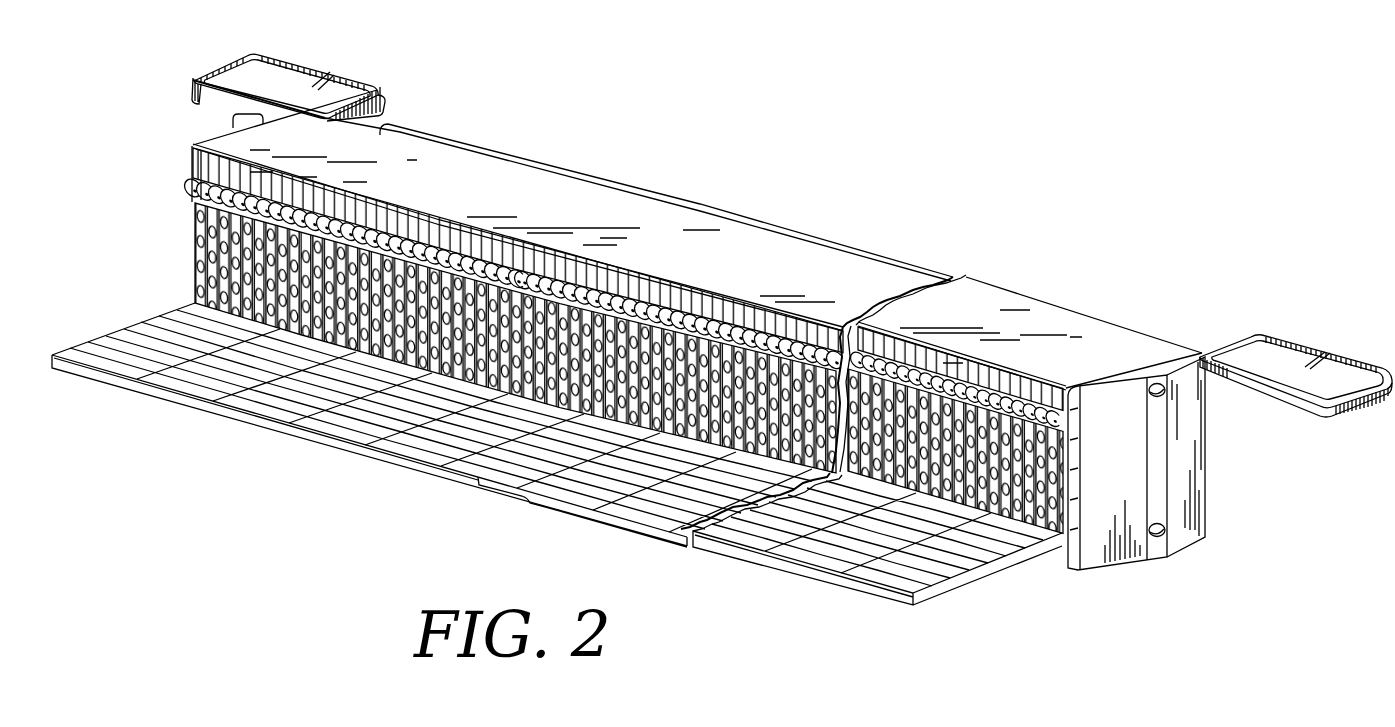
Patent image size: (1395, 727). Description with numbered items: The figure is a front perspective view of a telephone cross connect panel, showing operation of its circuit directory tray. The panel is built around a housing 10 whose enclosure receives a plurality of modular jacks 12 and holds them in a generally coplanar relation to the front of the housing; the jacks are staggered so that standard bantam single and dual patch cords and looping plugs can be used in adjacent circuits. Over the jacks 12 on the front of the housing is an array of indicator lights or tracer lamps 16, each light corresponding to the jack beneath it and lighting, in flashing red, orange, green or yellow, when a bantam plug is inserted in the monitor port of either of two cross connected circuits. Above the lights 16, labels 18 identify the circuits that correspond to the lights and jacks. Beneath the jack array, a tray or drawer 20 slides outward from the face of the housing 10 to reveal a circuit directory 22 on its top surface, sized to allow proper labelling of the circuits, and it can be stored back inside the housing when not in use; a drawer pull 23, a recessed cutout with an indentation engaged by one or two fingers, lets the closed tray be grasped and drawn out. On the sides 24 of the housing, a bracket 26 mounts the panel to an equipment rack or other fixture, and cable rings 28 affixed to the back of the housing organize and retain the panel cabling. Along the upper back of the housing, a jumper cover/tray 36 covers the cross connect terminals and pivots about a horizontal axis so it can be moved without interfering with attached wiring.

The housing 10 is at (790, 255).
The modular jacks 12 is at (208, 222).
The indicator lights or tracer lamps 16 is at (195, 188).
The labels 18 is at (200, 167).
The tray or drawer 20 is at (255, 425).
The circuit directory 22 is at (183, 330).
The drawer pull 23 is at (500, 492).
The sides 24 is at (222, 137).
The bracket 26 is at (1160, 550).
The cable ring 28 is at (285, 68).
The jumper cover/tray 36 is at (1020, 300).